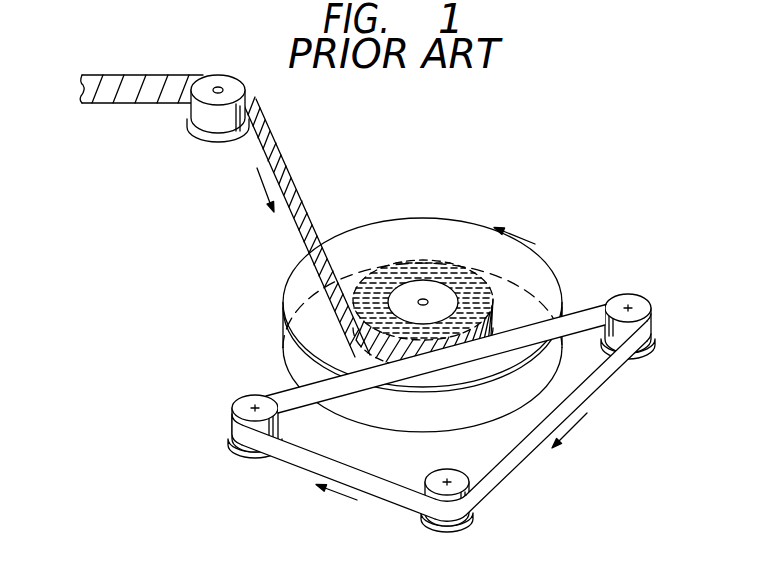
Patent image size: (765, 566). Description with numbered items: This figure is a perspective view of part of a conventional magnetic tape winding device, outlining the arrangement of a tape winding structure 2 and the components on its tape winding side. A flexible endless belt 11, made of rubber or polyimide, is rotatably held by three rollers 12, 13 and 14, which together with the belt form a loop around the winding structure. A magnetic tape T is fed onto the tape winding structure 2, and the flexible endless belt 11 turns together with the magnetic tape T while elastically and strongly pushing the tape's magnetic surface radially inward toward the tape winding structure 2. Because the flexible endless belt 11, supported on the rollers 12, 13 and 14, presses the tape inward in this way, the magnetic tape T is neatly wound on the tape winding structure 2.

The tape winding structure 2 is at (440, 232).
The magnetic tape T is at (296, 188).
The flexible endless belt 11 is at (283, 392).
The roller 12 is at (244, 402).
The roller 13 is at (641, 303).
The roller 14 is at (464, 481).